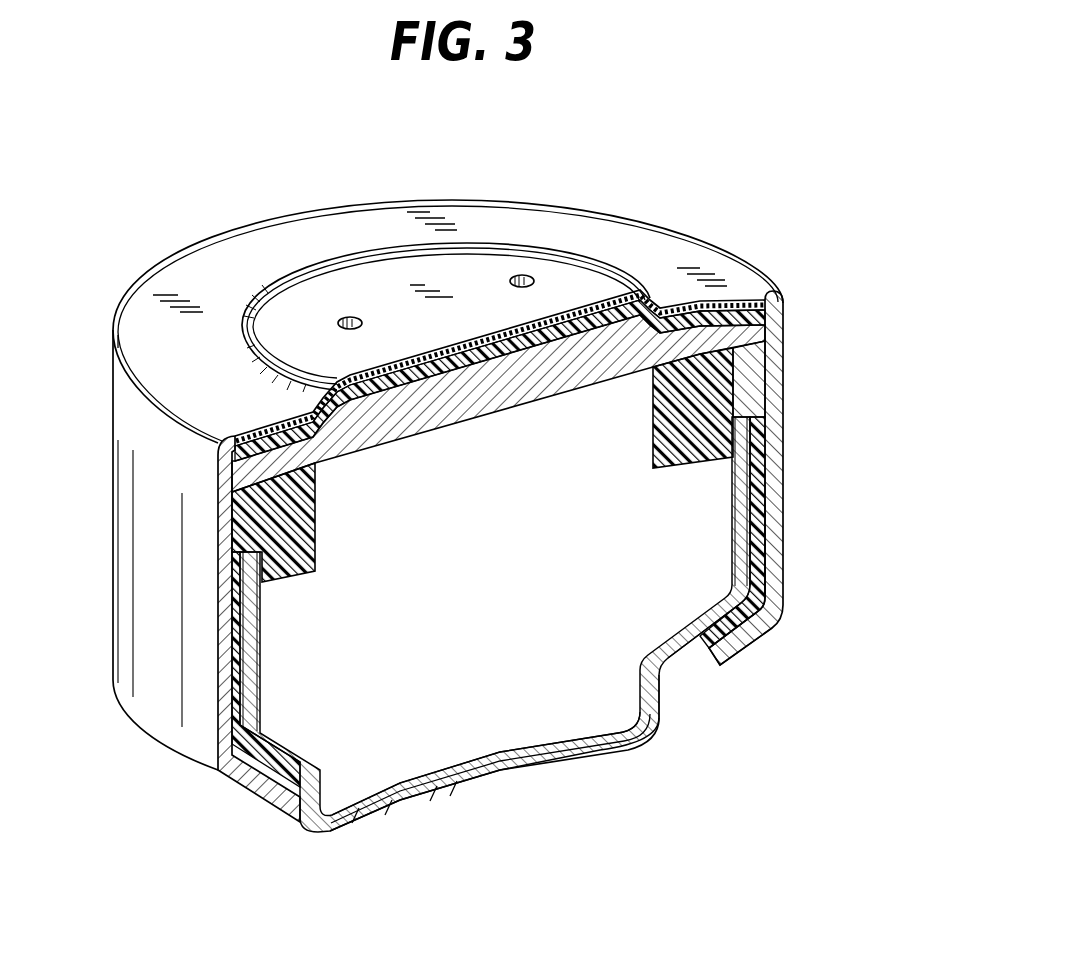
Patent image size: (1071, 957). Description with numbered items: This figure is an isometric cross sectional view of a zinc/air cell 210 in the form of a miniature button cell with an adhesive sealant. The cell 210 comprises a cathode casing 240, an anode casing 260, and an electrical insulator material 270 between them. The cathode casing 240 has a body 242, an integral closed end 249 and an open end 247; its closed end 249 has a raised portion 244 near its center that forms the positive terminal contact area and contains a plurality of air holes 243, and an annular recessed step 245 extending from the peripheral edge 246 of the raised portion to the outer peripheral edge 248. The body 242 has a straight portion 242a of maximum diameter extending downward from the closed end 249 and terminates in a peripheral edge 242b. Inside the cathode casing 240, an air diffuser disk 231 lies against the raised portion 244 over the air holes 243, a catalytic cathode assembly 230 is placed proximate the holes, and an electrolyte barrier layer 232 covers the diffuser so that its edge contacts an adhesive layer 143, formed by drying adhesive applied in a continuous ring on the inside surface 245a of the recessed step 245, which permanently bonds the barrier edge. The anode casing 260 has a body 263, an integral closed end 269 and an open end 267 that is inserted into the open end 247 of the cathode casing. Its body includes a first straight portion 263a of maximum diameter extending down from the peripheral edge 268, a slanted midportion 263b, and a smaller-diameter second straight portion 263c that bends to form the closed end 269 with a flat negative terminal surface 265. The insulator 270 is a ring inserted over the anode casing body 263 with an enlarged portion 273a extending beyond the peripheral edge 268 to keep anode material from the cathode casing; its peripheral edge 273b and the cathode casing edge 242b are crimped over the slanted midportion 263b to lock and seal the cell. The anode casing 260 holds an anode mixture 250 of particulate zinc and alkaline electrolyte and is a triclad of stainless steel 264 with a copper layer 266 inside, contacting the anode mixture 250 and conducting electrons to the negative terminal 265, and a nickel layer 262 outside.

The zinc/air cell 210 is at (220, 197).
The closed end of the cathode casing 249 is at (177, 270).
The outer peripheral edge 248 is at (112, 330).
The peripheral edge of the raised terminal portion 246 is at (300, 280).
The air holes 243 is at (352, 318).
The raised portion 244 is at (470, 263).
The annular recessed step 245 is at (613, 235).
The cathode casing 240 is at (660, 302).
The air diffuser disk 231 is at (648, 325).
The inside surface of recessed annular step 245a is at (733, 297).
The adhesive layer 143 is at (783, 300).
The electrolyte barrier layer 232 is at (765, 306).
The catalytic cathode assembly 230 is at (753, 333).
The enlarged portion of insulator ring 273a is at (740, 373).
The peripheral edge of the anode casing 268 is at (747, 420).
The body of cathode casing 242 is at (783, 448).
The electrical insulator material 270 is at (760, 473).
The first straight body portion 263a is at (747, 513).
The straight portion of cathode casing body 242a is at (783, 560).
The peripheral edge of insulator ring 273b is at (730, 626).
The peripheral edge of cathode casing 242b is at (738, 641).
The body of anode casing 263 is at (247, 643).
The open end of the anode casing 267 is at (228, 548).
The open end of cathode casing 247 is at (272, 788).
The slanted midportion 263b is at (682, 660).
The second straight portion 263c is at (662, 698).
The anode casing 260 is at (667, 742).
The anode mixture 250 is at (573, 703).
The nickel layer 262 is at (563, 760).
The stainless steel 264 is at (500, 765).
The negative terminal surface 265 is at (437, 792).
The closed end of the anode casing 269 is at (392, 812).
The copper layer 266 is at (357, 805).